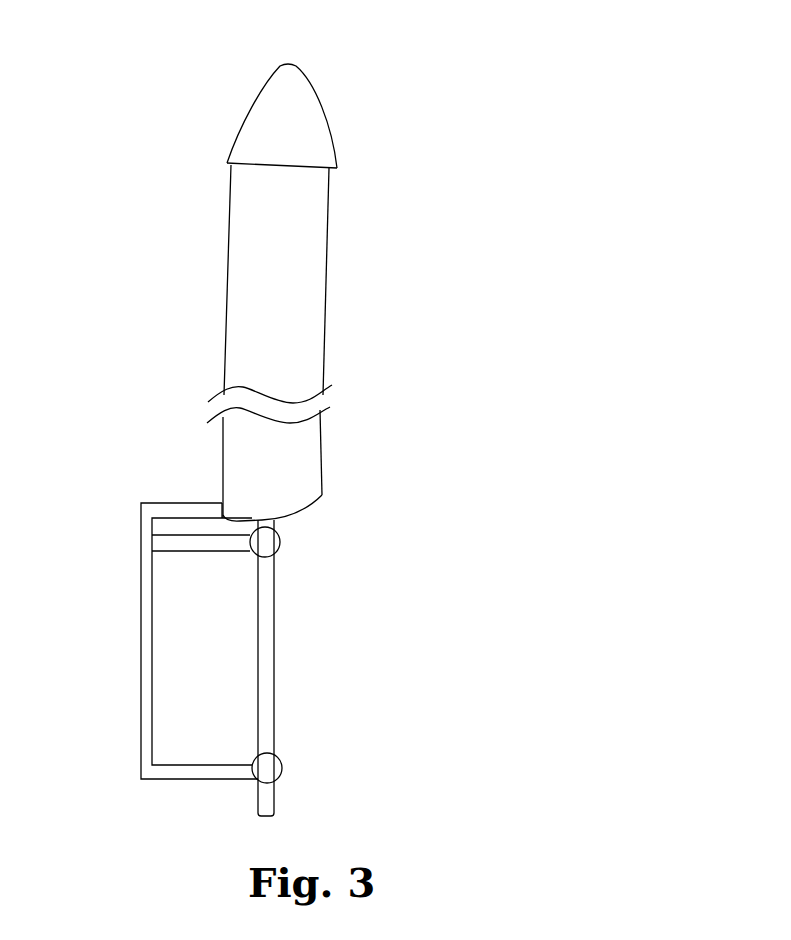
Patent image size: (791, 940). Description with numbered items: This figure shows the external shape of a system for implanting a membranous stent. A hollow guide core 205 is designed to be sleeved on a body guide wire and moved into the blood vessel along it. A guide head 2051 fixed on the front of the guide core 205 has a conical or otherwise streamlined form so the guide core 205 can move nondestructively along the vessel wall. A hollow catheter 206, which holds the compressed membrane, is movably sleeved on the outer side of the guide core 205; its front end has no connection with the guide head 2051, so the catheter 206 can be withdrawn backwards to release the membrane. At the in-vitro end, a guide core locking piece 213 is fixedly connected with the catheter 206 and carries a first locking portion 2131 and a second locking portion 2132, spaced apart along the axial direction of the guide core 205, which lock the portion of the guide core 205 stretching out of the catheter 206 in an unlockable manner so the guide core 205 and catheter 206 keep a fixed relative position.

The guide head 2051 is at (293, 117).
The catheter 206 is at (280, 264).
The guide core locking piece 213 is at (143, 537).
The guide core 205 is at (258, 688).
The second locking portion 2132 is at (279, 537).
The first locking portion 2131 is at (282, 770).